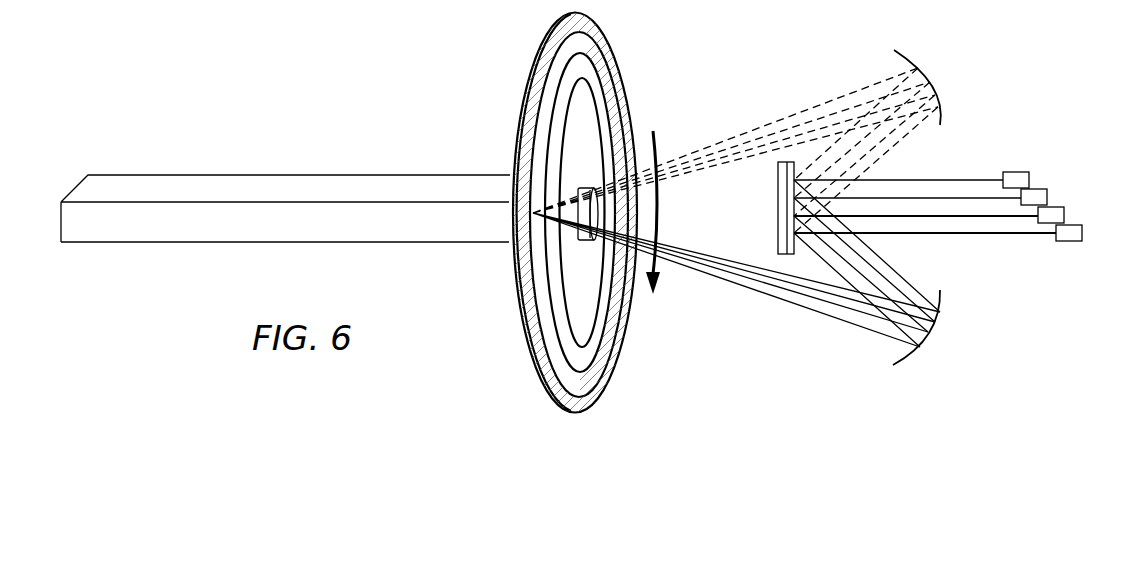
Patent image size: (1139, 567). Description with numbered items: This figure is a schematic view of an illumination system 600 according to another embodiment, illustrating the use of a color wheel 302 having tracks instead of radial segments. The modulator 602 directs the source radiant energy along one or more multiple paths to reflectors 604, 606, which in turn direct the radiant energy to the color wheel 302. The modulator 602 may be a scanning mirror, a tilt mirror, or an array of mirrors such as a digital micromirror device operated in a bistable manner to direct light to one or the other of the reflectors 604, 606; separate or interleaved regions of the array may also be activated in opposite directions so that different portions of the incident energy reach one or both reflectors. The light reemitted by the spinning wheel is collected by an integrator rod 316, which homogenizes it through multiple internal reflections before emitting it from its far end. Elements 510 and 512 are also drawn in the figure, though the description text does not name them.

The optical sensing system 600 is at (1016, 53).
The integrator rod 316 is at (251, 186).
The color wheel 302 is at (620, 66).
The reflector 606 is at (905, 52).
The reflector 604 is at (906, 362).
The modulator 602 is at (777, 210).
The detector 512 is at (1019, 172).
The detector 510 is at (1068, 242).